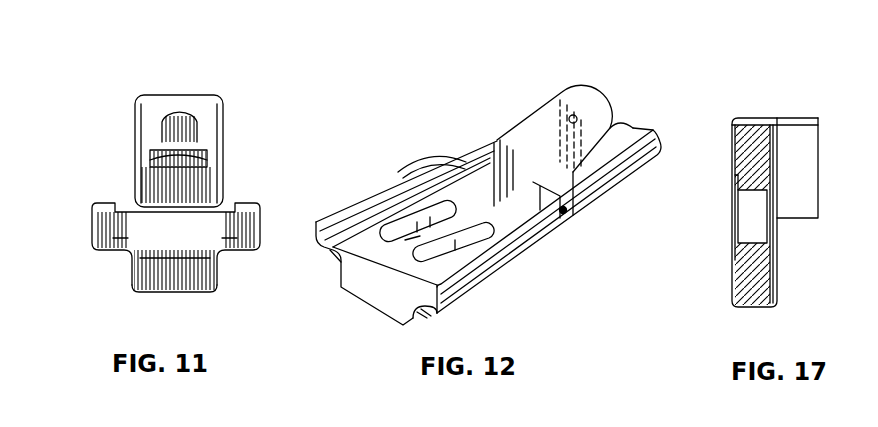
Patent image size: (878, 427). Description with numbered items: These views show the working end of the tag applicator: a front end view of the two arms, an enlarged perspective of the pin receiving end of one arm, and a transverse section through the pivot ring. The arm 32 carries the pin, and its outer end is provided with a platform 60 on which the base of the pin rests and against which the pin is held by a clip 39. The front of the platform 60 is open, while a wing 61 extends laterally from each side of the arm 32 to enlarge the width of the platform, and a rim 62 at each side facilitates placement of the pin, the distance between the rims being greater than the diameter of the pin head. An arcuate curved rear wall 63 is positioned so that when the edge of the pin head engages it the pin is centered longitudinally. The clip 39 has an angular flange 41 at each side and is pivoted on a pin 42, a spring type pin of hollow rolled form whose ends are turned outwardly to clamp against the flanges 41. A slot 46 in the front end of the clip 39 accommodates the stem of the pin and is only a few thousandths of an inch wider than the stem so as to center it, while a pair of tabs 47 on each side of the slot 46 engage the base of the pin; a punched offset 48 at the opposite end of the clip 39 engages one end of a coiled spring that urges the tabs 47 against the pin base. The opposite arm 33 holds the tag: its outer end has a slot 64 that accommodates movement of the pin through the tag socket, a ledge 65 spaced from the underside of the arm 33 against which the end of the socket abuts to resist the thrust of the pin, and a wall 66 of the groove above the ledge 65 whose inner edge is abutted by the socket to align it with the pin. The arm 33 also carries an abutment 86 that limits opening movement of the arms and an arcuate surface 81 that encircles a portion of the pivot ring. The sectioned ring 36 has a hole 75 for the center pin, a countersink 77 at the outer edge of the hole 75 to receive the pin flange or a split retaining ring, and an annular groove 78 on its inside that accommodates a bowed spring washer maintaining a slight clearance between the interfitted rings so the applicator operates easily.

In FIG. 11, the arm 33 is at (193, 95).
In FIG. 11, the slot 64 is at (195, 128).
In FIG. 11, the ledge 65 is at (152, 148).
In FIG. 11, the wall 66 is at (148, 165).
In FIG. 11, the rim 62 is at (112, 203).
In FIG. 12, the rim 62 is at (378, 190).
In FIG. 11, the platform 60 is at (233, 203).
In FIG. 12, the platform 60 is at (340, 262).
In FIG. 11, the wing 61 is at (112, 238).
In FIG. 12, the wing 61 is at (324, 259).
In FIG. 11, the arm 32 is at (132, 276).
In FIG. 12, the arm 32 is at (365, 298).
In FIG. 12, the arcuate curved rear wall 63 is at (463, 162).
In FIG. 12, the angular flange 41 is at (484, 150).
In FIG. 12, the clip 39 is at (540, 127).
In FIG. 12, the punched offset 48 is at (575, 115).
In FIG. 12, the tabs 47 is at (393, 228).
In FIG. 12, the slot 46 is at (412, 243).
In FIG. 12, the pin 42 is at (567, 220).
In FIG. 17, the abutment 86 is at (790, 123).
In FIG. 17, the countersink 77 is at (735, 176).
In FIG. 17, the arcuate surface 81 is at (808, 176).
In FIG. 17, the hole 75 is at (748, 193).
In FIG. 17, the ring 36 is at (735, 282).
In FIG. 17, the annular groove 78 is at (771, 270).